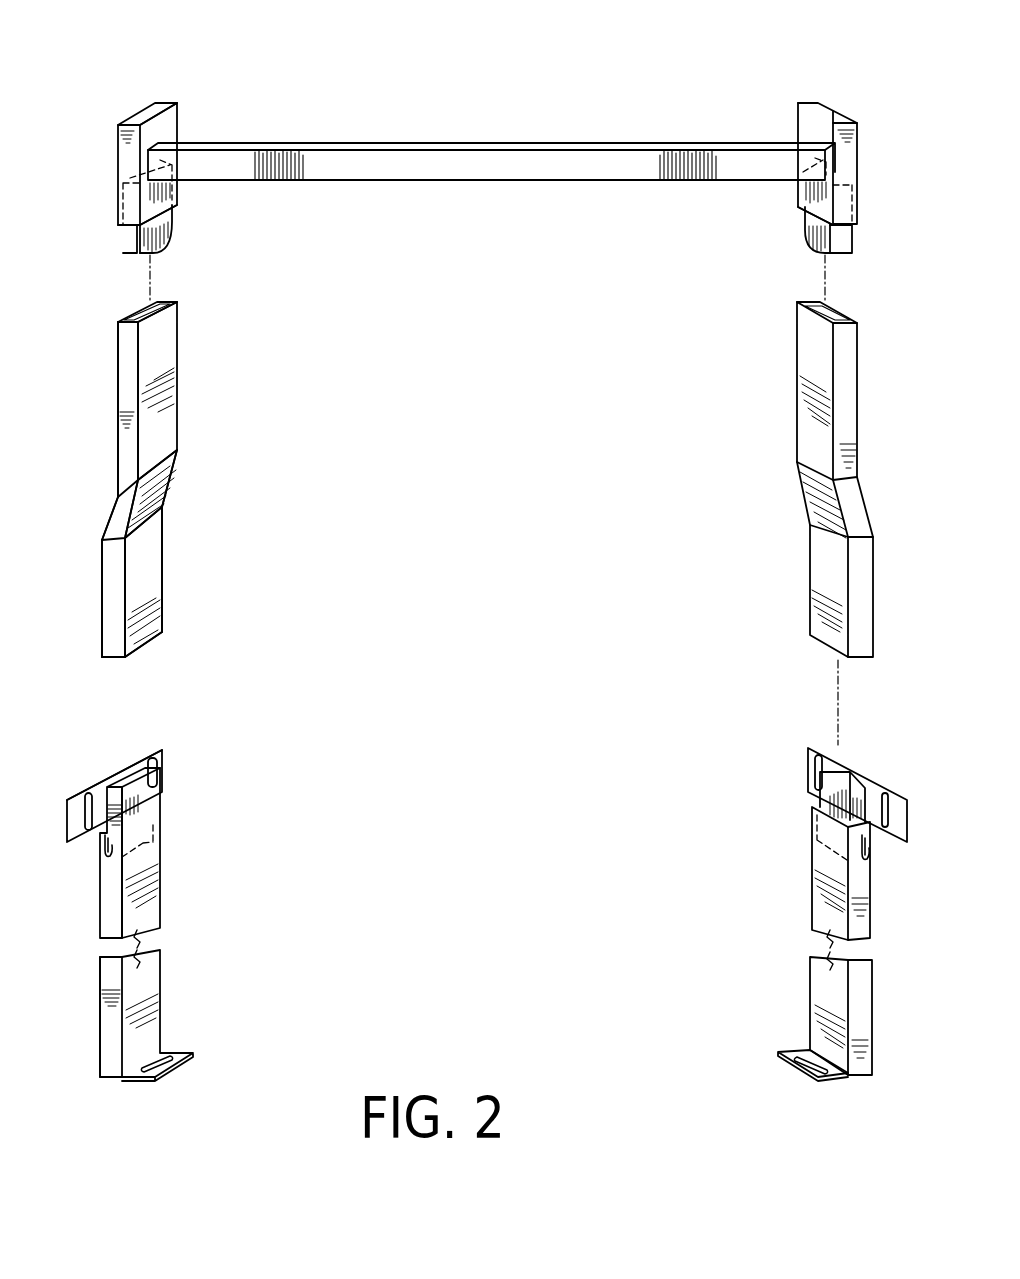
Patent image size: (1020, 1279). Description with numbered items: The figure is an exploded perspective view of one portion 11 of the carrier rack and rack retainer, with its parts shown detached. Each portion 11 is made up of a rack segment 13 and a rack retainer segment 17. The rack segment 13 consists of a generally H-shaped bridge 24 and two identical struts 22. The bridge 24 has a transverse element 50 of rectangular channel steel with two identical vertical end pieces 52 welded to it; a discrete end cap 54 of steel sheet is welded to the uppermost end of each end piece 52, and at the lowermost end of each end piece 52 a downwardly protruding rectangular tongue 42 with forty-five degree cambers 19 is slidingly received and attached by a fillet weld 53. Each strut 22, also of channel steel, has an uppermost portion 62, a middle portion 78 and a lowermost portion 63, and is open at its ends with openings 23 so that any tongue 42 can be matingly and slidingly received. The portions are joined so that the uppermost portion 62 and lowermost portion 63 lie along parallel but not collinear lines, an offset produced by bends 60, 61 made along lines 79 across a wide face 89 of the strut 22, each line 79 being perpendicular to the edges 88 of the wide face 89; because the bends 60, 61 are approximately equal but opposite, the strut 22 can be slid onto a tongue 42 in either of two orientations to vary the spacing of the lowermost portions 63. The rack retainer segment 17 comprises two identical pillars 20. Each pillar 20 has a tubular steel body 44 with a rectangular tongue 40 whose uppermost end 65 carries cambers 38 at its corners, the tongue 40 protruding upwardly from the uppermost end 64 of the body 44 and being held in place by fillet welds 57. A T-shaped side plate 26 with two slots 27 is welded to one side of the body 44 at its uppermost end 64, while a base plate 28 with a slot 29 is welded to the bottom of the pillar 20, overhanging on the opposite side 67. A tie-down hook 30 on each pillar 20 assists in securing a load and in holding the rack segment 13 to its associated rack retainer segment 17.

The portion 11 is at (406, 97).
The rack segment 13 is at (453, 873).
The rack retainer segment 17 is at (543, 983).
The cambers 19 is at (135, 258).
The pillar 20 is at (175, 838).
The strut 22 is at (162, 408).
The openings 23 is at (137, 320).
The bridge 24 is at (106, 144).
The side plate 26 is at (98, 807).
The slots 27 is at (72, 800).
The base plate 28 is at (485, 1088).
The slot 29 is at (168, 1067).
The tie-down hook 30 is at (103, 850).
The cambers 38 is at (115, 780).
The tongue 40 is at (484, 761).
The tongue 42 is at (160, 232).
The body 44 is at (148, 985).
The transverse element 50 is at (508, 157).
The end piece 52 is at (170, 117).
The fillet weld 53 is at (167, 217).
The end cap 54 is at (148, 110).
The fillet welds 57 is at (153, 843).
The bend 60 is at (122, 498).
The bend 61 is at (162, 513).
The uppermost portion 62 is at (168, 327).
The lowermost portion 63 is at (163, 603).
The uppermost end 64 is at (160, 870).
The uppermost end 65 is at (132, 783).
The side 67 is at (132, 1030).
The middle portion 78 is at (160, 487).
The lines 79 is at (165, 453).
The edges 88 is at (118, 393).
The wide face 89 is at (150, 563).